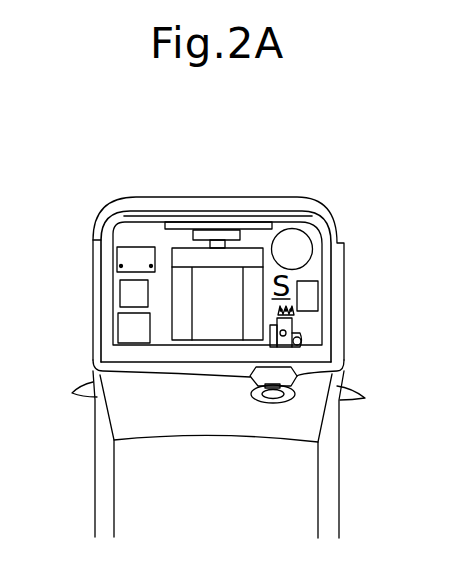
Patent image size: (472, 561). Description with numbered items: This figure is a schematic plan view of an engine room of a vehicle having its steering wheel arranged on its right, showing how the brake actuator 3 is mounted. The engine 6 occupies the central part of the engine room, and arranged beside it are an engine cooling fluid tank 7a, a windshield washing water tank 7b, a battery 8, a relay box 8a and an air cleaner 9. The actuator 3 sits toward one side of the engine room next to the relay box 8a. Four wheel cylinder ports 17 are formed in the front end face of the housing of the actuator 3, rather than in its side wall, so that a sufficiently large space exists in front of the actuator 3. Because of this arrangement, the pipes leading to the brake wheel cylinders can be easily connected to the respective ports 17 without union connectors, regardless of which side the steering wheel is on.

The actuator 3 is at (289, 315).
The engine 6 is at (223, 292).
The engine cooling fluid tank 7a is at (130, 331).
The windshield washing water tank 7b is at (132, 293).
The battery 8 is at (137, 258).
The relay box 8a is at (308, 294).
The air cleaner 9 is at (296, 246).
The wheel cylinder ports 17 is at (293, 322).